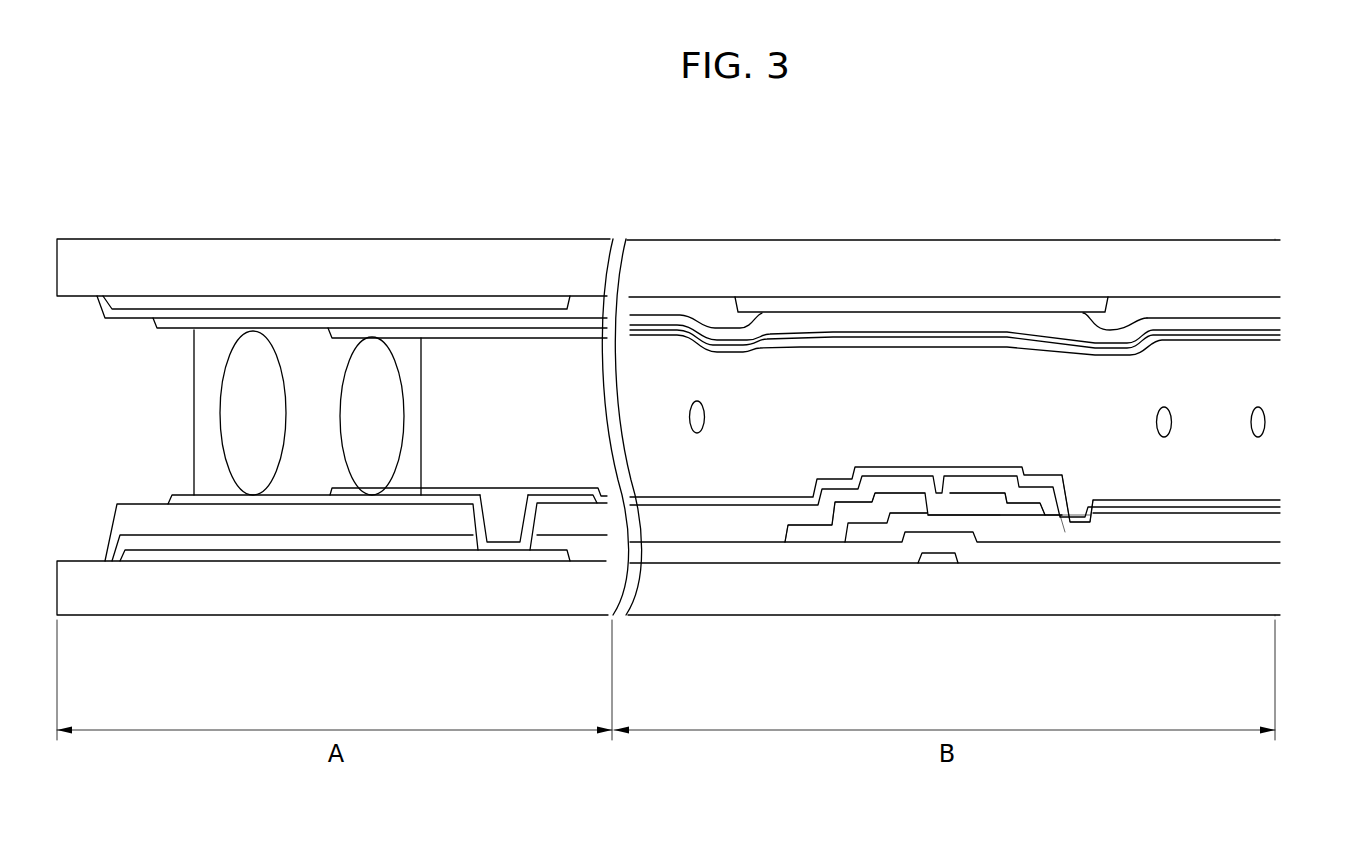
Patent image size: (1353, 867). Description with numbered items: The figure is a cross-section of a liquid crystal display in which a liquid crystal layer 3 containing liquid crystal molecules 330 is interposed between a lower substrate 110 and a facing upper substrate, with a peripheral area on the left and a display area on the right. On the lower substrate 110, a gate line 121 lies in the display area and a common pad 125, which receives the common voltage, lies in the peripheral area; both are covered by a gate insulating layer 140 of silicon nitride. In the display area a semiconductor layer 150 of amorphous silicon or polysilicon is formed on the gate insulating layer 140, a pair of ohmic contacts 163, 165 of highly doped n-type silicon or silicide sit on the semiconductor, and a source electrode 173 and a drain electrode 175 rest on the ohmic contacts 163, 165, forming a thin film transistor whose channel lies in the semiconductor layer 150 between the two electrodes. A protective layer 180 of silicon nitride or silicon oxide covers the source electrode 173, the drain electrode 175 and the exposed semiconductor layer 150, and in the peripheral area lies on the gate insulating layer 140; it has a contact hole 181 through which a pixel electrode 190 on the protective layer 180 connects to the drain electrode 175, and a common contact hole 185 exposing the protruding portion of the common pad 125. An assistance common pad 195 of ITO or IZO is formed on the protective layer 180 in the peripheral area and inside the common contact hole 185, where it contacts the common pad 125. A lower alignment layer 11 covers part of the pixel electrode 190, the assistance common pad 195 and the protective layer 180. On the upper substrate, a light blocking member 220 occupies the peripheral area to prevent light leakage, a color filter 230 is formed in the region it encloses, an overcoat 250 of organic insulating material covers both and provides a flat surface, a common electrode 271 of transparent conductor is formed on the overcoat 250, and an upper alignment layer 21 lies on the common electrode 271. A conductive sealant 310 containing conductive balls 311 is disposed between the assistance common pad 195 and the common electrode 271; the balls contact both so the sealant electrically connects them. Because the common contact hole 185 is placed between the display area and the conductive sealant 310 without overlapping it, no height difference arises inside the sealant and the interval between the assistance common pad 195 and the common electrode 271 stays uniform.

The liquid crystal layer 3 is at (1268, 463).
The lower alignment layer 11 is at (565, 495).
The upper alignment layer 21 is at (508, 340).
The lower substrate 110 is at (408, 598).
The gate line 121 is at (937, 559).
The common pad 125 is at (150, 556).
The gate insulating layer 140 is at (277, 543).
The semiconductor layer 150 is at (1013, 533).
The ohmic contact 163 is at (867, 525).
The ohmic contact 165 is at (993, 530).
The source electrode 173 is at (805, 533).
The drain electrode 175 is at (1088, 533).
The protective layer 180 is at (343, 518).
The contact hole 181 is at (1068, 500).
The common contact hole 185 is at (482, 518).
The pixel electrode 190 is at (1172, 510).
The assistance common pad 195 is at (212, 500).
The light blocking member 220 is at (293, 302).
The color filter 230 is at (1210, 305).
The overcoat 250 is at (365, 313).
The common electrode 271 is at (440, 327).
The conductive sealant 310 is at (192, 443).
The conductive balls 311 is at (237, 390).
The liquid crystal molecules 330 is at (1156, 422).